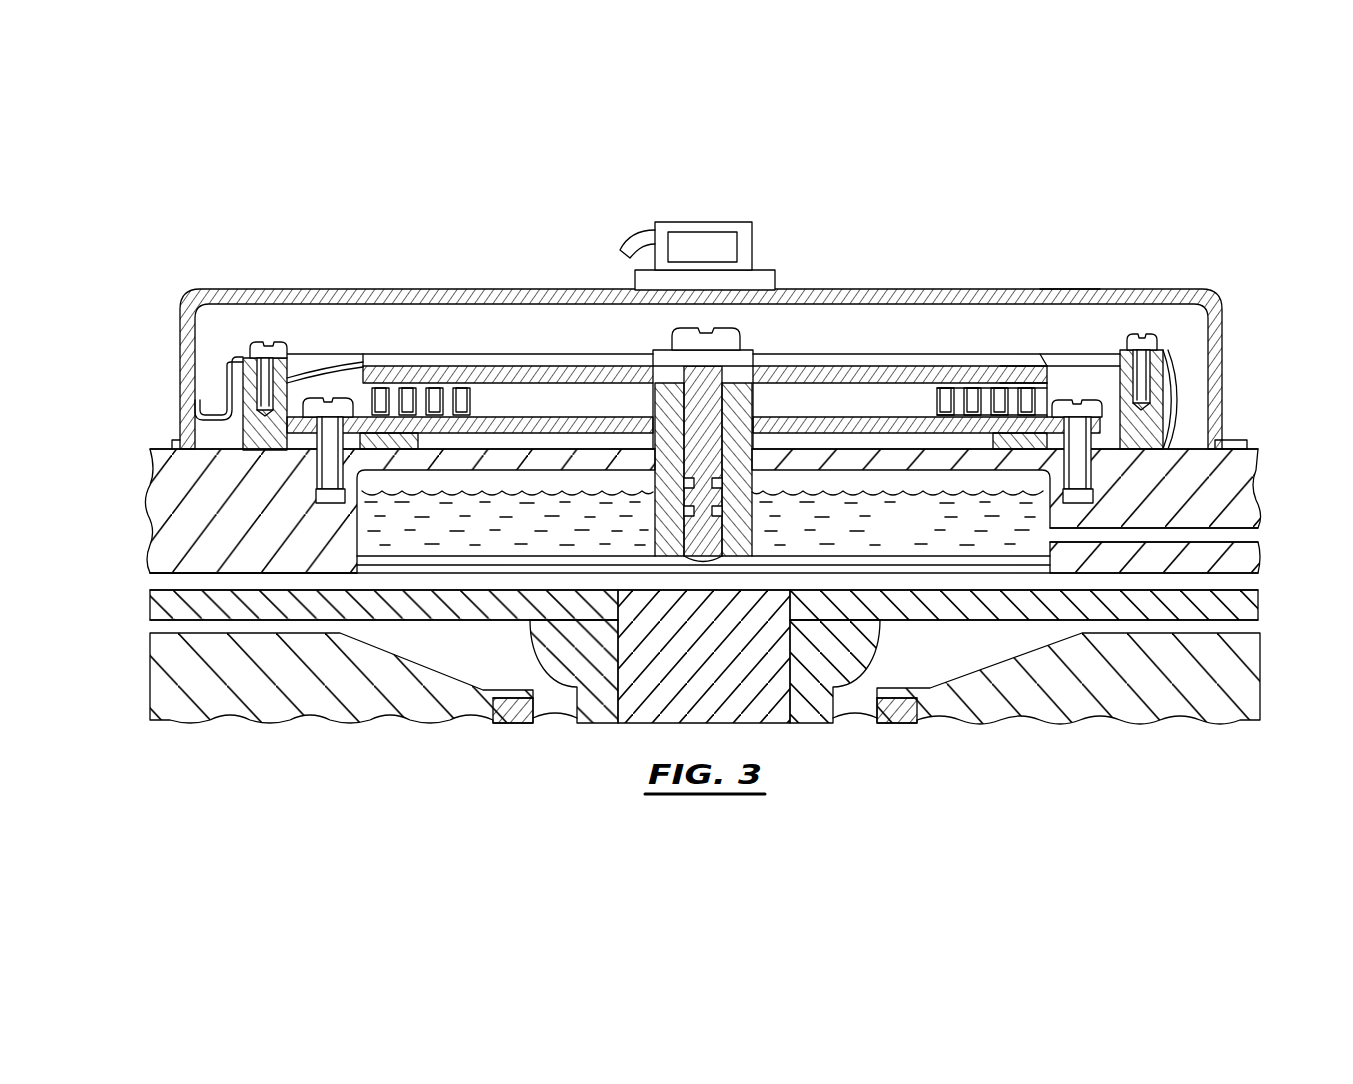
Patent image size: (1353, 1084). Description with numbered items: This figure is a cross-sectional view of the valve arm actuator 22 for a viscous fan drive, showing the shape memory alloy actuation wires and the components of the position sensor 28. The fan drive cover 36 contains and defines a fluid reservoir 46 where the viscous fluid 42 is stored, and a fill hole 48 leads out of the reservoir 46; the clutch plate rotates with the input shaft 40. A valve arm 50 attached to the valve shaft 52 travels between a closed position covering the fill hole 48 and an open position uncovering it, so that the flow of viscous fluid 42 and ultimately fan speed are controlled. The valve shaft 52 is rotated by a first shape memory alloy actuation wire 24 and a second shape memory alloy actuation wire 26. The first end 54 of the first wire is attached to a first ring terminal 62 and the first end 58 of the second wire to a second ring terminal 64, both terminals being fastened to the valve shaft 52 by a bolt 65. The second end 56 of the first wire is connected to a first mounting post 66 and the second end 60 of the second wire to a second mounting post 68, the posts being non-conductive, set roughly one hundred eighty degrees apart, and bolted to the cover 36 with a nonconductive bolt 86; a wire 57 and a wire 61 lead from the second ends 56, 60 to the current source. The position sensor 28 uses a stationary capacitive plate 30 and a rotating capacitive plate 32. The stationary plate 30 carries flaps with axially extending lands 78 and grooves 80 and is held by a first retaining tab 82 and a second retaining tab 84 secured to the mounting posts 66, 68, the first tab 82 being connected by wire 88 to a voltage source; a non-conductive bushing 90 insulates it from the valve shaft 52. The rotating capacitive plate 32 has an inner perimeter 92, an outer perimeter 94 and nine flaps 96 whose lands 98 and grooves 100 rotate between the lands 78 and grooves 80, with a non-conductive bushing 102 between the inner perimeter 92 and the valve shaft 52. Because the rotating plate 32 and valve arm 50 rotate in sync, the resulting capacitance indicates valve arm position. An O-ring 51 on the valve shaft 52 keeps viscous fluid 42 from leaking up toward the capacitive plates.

The valve arm actuator 22 is at (1062, 268).
The first shape memory alloy actuation wire 24 is at (417, 360).
The second shape memory alloy actuation wire 26 is at (1015, 362).
The position sensor 28 is at (866, 366).
The stationary capacitive plate 30 is at (565, 418).
The rotating capacitive plate 32 is at (512, 392).
The fan drive cover 36 is at (1213, 470).
The input shaft 40 is at (707, 658).
The viscous fluid 42 is at (387, 540).
The fluid reservoir 46 is at (507, 507).
The fill hole 48 is at (400, 578).
The valve arm 50 is at (857, 543).
The O-ring 51 is at (728, 488).
The valve shaft 52 is at (663, 452).
The first end of first SMA actuation wire 54 is at (665, 358).
The second end of first SMA actuation wire 56 is at (285, 352).
The wire 57 is at (235, 360).
The first end of second SMA actuation wire 58 is at (742, 347).
The second end of second SMA actuation wire 60 is at (1097, 350).
The wire 61 is at (1167, 385).
The first ring terminal 62 is at (770, 355).
The second ring terminal 64 is at (668, 330).
The bolt 65 is at (748, 295).
The first mounting post 66 is at (212, 443).
The second mounting post 68 is at (1143, 437).
The lands 78 is at (955, 372).
The grooves 80 is at (987, 388).
The first retaining tab 82 is at (362, 452).
The second retaining tab 84 is at (1113, 457).
The nonconductive bolt 86 is at (352, 398).
The wire 88 is at (340, 450).
The bushing 90 is at (653, 433).
The inner perimeter of rotating capacitive plate 92 is at (770, 376).
The outer perimeter of rotating capacitive plate 94 is at (928, 390).
The flaps 96 is at (1047, 362).
The lands 98 is at (1043, 393).
The grooves 100 is at (1040, 377).
The non-conductive bushing 102 is at (738, 388).